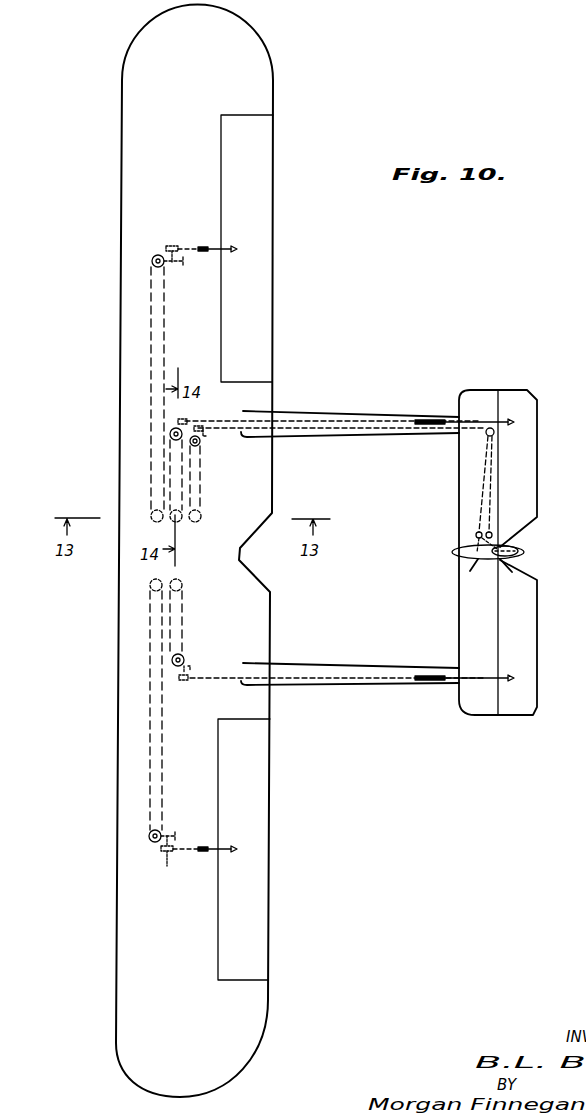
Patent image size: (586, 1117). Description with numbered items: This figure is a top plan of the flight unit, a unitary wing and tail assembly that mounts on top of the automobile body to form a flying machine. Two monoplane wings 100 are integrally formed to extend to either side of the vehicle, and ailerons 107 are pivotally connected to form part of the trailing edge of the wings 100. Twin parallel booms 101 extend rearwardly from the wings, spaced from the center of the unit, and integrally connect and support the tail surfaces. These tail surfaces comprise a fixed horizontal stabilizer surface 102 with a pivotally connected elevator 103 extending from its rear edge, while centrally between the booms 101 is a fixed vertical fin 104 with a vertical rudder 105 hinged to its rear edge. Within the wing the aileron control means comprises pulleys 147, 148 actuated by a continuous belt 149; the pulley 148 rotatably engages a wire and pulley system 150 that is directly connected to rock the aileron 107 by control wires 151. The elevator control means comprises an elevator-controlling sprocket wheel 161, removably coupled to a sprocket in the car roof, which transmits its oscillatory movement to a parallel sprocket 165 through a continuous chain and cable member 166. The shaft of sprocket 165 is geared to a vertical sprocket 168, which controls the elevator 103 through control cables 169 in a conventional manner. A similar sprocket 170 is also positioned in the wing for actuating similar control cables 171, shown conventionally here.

The monoplane wing 100 is at (121, 176).
The boom 101 is at (345, 413).
The horizontal stabilizer surface 102 is at (468, 602).
The elevator 103 is at (520, 465).
The vertical fin 104 is at (472, 556).
The vertical rudder 105 is at (520, 551).
The aileron 107 is at (253, 232).
The pulley 147 is at (151, 514).
The pulley 148 is at (151, 261).
The continuous belt 149 is at (152, 352).
The wire and pulley system 150 is at (172, 246).
The control wire 151 is at (215, 248).
The elevator-controlling sprocket wheel 161 is at (180, 522).
The sprocket 165 is at (170, 434).
The continuous chain and cable member 166 is at (170, 455).
The vertical sprocket 168 is at (187, 420).
The control cable 169 is at (291, 420).
The sprocket 170 is at (201, 516).
The control cable 171 is at (480, 500).